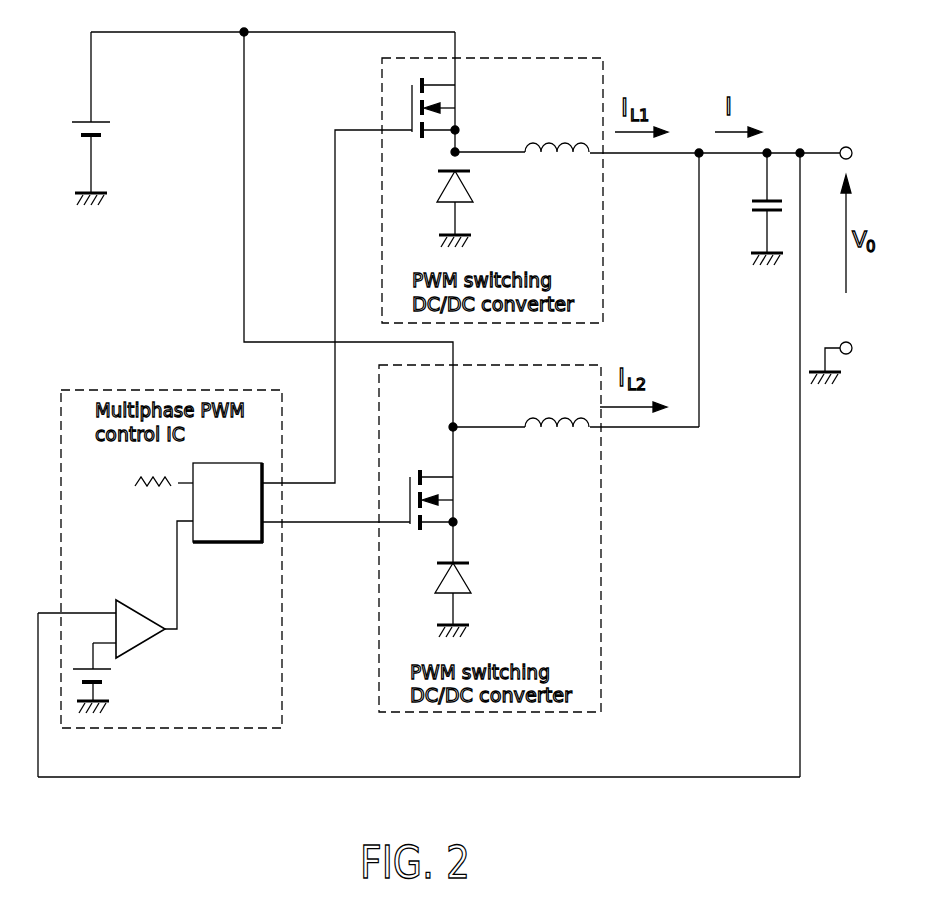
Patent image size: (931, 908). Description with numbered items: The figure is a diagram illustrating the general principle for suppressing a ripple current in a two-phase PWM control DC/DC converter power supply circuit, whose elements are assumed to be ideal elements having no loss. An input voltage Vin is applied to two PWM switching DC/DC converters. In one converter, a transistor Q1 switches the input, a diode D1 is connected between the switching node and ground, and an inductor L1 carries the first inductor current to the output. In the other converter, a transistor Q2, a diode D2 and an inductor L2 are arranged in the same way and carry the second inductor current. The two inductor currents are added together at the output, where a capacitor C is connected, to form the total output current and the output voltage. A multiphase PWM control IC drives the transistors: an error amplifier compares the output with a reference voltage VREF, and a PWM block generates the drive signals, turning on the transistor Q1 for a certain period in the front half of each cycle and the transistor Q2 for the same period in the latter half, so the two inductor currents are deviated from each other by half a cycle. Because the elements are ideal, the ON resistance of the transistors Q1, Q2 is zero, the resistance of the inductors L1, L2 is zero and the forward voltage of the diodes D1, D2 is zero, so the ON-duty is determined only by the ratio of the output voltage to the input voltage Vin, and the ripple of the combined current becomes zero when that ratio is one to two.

The input voltage Vin is at (110, 162).
The transistor Q1 is at (454, 108).
The diode D1 is at (471, 209).
The inductor L1 is at (557, 129).
The capacitor C is at (756, 209).
The inductor L2 is at (557, 403).
The transistor Q2 is at (453, 500).
The diode D2 is at (469, 579).
The element PWM is at (199, 503).
The reference voltage VREF is at (116, 678).